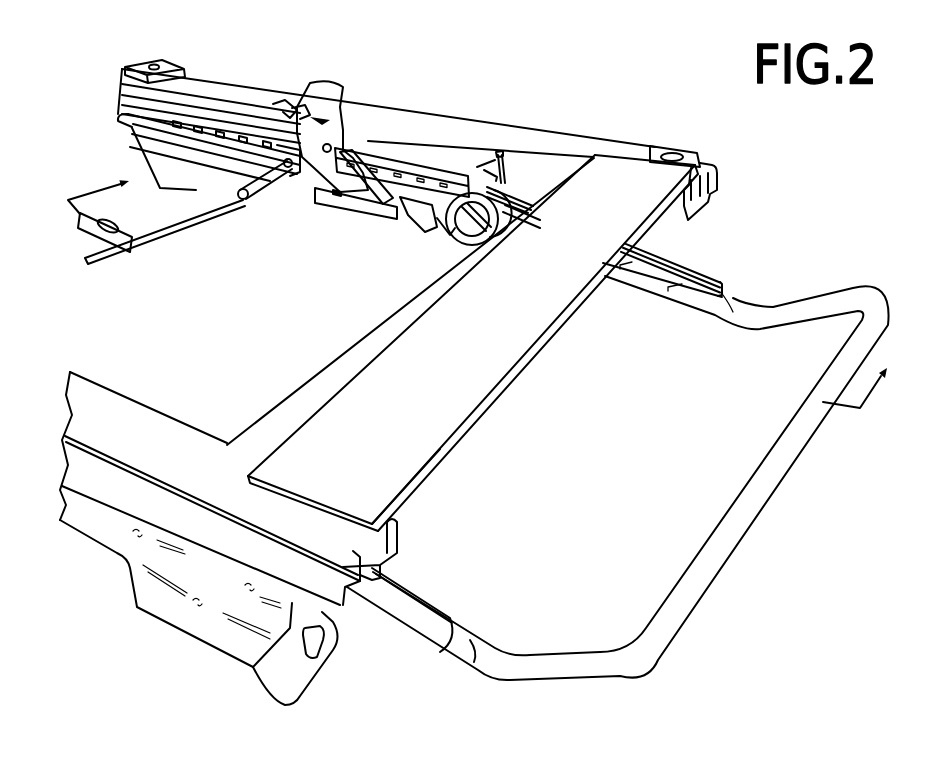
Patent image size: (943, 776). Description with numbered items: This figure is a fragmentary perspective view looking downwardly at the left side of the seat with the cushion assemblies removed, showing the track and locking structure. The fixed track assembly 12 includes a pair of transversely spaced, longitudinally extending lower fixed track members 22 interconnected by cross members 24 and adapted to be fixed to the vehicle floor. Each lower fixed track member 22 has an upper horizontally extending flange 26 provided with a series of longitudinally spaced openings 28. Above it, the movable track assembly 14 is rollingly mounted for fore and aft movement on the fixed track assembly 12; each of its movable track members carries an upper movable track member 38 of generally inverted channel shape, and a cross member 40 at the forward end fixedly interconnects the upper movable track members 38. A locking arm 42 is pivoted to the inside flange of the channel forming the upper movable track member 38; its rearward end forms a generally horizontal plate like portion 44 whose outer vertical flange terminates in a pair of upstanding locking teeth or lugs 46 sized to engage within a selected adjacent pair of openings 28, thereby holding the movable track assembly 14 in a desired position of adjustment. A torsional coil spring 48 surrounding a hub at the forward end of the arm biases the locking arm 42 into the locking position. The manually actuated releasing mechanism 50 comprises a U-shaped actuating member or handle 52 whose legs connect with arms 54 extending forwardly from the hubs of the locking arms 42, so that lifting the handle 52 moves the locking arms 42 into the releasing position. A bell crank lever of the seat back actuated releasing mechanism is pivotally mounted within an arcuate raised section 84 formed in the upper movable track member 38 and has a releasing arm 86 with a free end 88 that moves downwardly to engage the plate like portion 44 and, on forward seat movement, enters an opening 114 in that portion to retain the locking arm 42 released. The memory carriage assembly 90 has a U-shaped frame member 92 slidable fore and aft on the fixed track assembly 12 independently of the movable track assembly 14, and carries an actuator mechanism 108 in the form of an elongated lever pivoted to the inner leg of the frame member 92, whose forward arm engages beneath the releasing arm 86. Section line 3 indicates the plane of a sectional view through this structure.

The section line 3- 3 is at (468, 312).
The fixed track assembly 12 is at (112, 148).
The movable track assembly 14 is at (728, 179).
The lower fixed track member 22 is at (195, 190).
The cross member 24 is at (86, 272).
The upper horizontally extending flange 26 is at (128, 114).
The openings 28 is at (220, 127).
The upper movable track member 38 is at (260, 72).
The cross member 40 is at (448, 441).
The locking arm 42 is at (428, 216).
The plate like portion 44 is at (398, 212).
The locking teeth or lugs 46 is at (408, 158).
The torsional coil spring 48 is at (507, 187).
The manually actuated releasing mechanism 50 is at (775, 520).
The U-shaped actuating member or handle 52 is at (793, 436).
The arms 54 is at (513, 210).
The arcuate raised section 84 is at (314, 100).
The releasing arm 86 is at (400, 148).
The free end 88 is at (410, 212).
The memory carriage assembly 90 is at (293, 222).
The U-shaped frame member 92 is at (252, 196).
The actuator mechanism 108 is at (253, 177).
The opening 114 is at (327, 142).